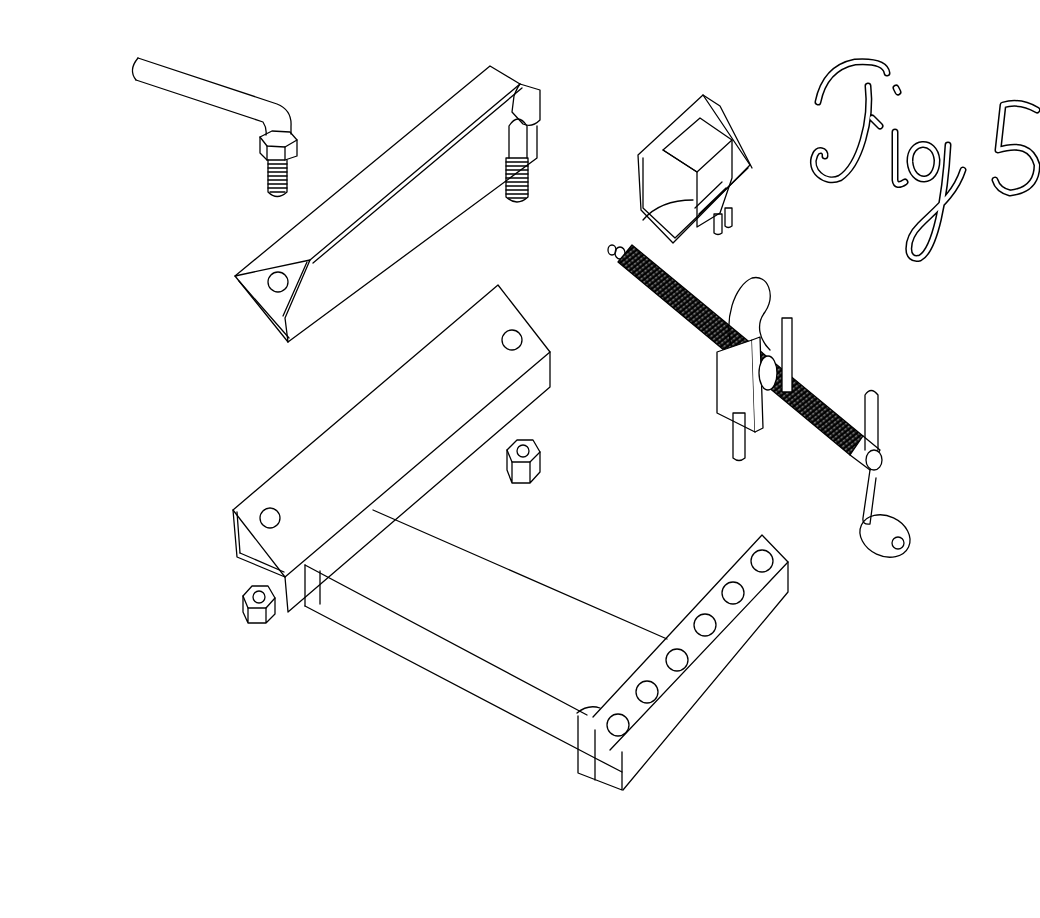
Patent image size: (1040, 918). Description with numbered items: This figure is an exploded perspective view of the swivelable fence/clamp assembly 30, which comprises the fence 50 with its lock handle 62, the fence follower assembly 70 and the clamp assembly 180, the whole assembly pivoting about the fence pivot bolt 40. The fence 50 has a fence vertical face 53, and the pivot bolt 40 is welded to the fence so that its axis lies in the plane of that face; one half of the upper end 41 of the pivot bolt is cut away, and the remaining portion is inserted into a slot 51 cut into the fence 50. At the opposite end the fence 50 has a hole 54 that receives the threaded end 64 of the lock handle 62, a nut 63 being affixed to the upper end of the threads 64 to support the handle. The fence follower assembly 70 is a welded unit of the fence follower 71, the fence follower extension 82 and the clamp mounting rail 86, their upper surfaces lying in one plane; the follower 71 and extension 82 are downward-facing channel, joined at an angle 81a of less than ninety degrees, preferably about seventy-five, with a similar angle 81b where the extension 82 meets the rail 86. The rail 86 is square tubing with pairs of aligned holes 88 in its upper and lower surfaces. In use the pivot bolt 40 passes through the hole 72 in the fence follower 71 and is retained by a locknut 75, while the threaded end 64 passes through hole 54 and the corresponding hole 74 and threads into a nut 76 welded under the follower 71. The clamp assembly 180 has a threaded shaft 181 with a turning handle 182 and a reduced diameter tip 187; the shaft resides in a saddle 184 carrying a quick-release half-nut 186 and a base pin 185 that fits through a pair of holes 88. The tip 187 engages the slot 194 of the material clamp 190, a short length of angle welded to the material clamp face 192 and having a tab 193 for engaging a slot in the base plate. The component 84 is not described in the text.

The swivelable fence/clamp assembly 30 is at (248, 382).
The fence pivot bolt 40 is at (530, 172).
The upper end of pivot bolt 41 is at (530, 130).
The fence 50 is at (383, 152).
The slot 51 is at (522, 112).
The fence vertical face 53 is at (373, 242).
The hole 54 is at (272, 274).
The lock handle 62 is at (207, 70).
The nut 63 is at (298, 130).
The threaded end 64 is at (268, 178).
The fence follower assembly 70 is at (385, 658).
The fence follower 71 is at (308, 452).
The hole 72 is at (522, 338).
The hole 74 is at (264, 512).
The locknut 75 is at (532, 483).
The nut 76 is at (255, 623).
The angle 81a is at (328, 550).
The angle 81b is at (627, 678).
The fence follower extension 82 is at (480, 563).
The extension bar 84 is at (647, 636).
The clamp mounting rail 86 is at (705, 620).
The holes 88 is at (703, 640).
The clamp assembly 180 is at (808, 380).
The threaded shaft 181 is at (826, 396).
The turning handle 182 is at (893, 522).
The saddle 184 is at (770, 415).
The base pin 185 is at (733, 450).
The quick-release half-nut 186 is at (747, 282).
The reduced diameter tip 187 is at (610, 250).
The material clamp 190 is at (726, 132).
The material clamp face 192 is at (673, 118).
The tab 193 is at (728, 228).
The slot 194 is at (642, 221).